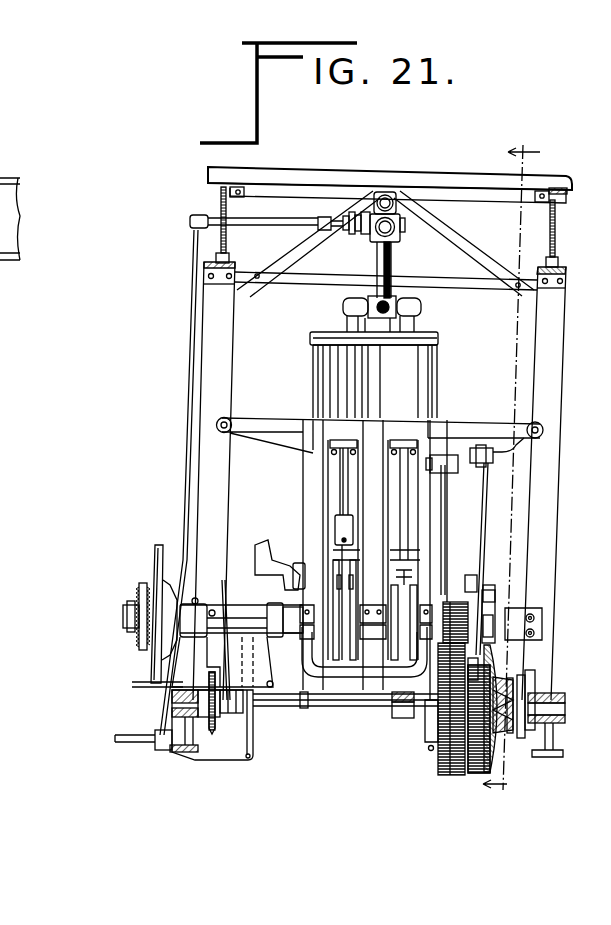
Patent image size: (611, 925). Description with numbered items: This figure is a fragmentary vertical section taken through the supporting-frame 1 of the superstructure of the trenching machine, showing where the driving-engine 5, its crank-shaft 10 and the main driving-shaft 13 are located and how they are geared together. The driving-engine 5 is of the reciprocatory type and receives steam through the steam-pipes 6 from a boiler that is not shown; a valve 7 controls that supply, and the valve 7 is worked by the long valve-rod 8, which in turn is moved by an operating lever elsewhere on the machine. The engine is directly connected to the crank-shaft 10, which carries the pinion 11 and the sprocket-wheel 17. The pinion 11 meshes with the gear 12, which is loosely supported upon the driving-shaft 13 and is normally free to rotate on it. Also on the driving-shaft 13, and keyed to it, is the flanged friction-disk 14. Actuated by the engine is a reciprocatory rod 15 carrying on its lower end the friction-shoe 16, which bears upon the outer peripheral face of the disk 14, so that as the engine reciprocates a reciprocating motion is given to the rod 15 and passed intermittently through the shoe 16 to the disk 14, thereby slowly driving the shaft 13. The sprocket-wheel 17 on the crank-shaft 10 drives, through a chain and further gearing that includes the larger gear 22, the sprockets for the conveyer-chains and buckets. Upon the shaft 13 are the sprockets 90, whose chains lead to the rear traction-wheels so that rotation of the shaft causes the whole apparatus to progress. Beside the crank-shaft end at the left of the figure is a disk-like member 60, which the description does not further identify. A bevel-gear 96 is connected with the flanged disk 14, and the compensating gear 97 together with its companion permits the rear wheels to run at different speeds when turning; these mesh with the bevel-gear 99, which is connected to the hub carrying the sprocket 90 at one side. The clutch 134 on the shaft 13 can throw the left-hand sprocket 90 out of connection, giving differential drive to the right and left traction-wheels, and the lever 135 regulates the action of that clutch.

The supporting-frame 1 is at (160, 722).
The driving-engine 5 is at (440, 363).
The steam-pipes 6 is at (378, 254).
The valve 7 is at (402, 234).
The valve-rod 8 is at (192, 370).
The crank-shaft 10 is at (228, 607).
The pinion 11 is at (451, 602).
The gear 12 is at (438, 762).
The driving-shaft 13 is at (328, 708).
The friction-disk 14 is at (476, 773).
The reciprocatory rod 15 is at (486, 512).
The friction-shoe 16 is at (500, 673).
The sprocket-wheel 17 is at (139, 604).
The gear 22 is at (511, 466).
The disc 60 is at (168, 553).
The sprockets 90 is at (213, 736).
The bevel-gear 96 is at (505, 738).
The compensating gear 97 is at (502, 737).
The bevel-gear 99 is at (535, 682).
The clutch 134 is at (250, 716).
The lever 135 is at (250, 748).